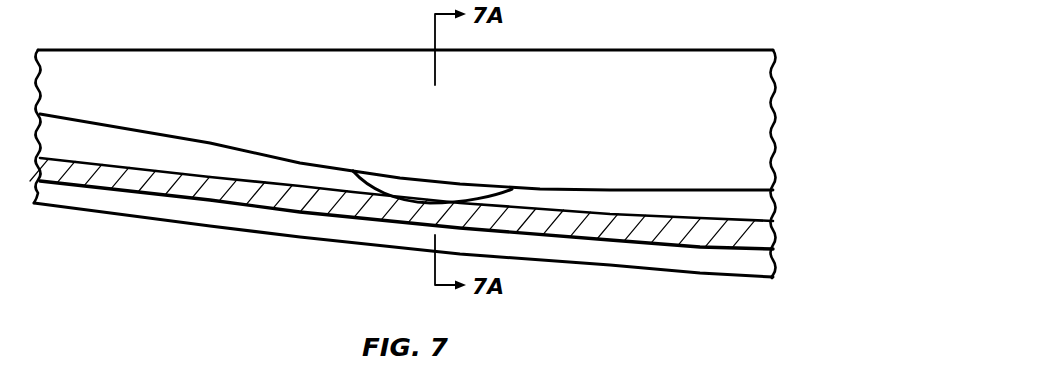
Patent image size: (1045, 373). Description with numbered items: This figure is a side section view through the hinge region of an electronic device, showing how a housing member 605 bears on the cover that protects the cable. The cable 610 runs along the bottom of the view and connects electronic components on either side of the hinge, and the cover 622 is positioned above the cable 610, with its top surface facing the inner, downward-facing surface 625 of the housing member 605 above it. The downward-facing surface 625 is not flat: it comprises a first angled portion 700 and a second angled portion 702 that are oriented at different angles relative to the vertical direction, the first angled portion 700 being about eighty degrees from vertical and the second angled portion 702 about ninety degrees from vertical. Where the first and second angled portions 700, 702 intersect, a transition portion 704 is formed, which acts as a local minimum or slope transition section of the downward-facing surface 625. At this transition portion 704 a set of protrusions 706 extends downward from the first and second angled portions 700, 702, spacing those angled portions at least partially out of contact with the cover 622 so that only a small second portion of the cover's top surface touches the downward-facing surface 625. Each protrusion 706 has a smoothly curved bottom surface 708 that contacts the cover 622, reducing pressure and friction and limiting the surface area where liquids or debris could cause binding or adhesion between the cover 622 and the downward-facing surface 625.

The cover layer 605 is at (633, 77).
The downward-facing surface 625 is at (740, 191).
The cover 622 is at (745, 222).
The cable 610 is at (718, 263).
The first angled portion 700 is at (218, 146).
The second angled portion 702 is at (593, 190).
The transition portion 704 is at (512, 303).
The protrusions 706 is at (391, 179).
The smoothly curved bottom surface 708 is at (502, 192).